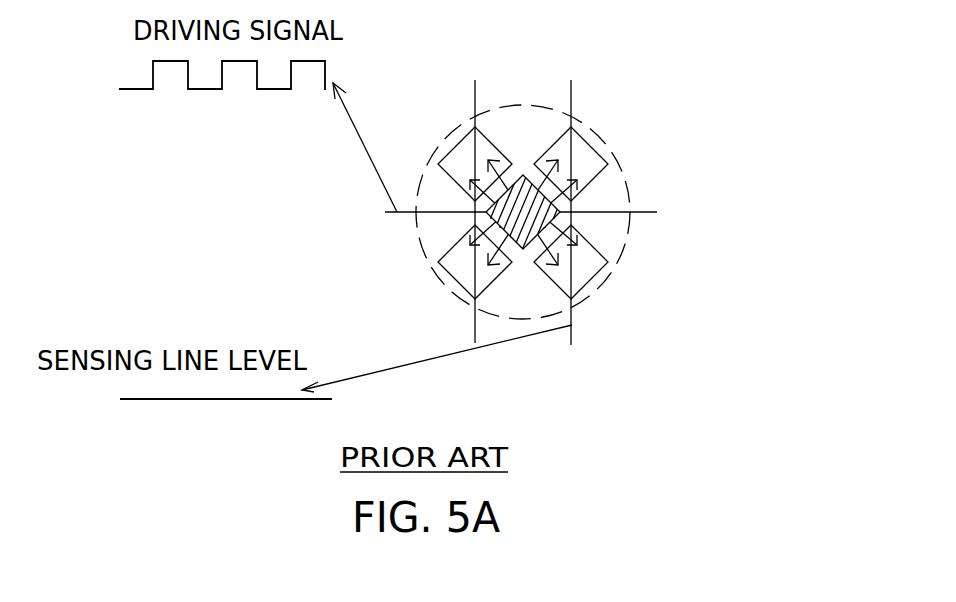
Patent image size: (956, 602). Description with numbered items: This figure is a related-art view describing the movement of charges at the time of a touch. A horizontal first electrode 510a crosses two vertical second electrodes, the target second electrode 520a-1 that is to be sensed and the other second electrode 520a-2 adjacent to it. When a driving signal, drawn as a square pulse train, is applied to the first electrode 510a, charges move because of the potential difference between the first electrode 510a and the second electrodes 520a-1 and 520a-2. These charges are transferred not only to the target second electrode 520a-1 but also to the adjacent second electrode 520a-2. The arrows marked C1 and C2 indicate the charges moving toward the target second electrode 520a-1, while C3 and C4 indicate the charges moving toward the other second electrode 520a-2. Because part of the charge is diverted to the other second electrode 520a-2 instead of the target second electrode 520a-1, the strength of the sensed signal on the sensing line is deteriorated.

The target second electrode 520a-1 is at (466, 191).
The other second electrode 520a-2 is at (579, 192).
The first electrode 510a is at (561, 214).
The charges moving to the target second electrode C1 is at (475, 164).
The charges moving to the target second electrode C2 is at (475, 262).
The charges moving to the other second electrode C3 is at (571, 262).
The charges moving to the other second electrode C4 is at (571, 164).